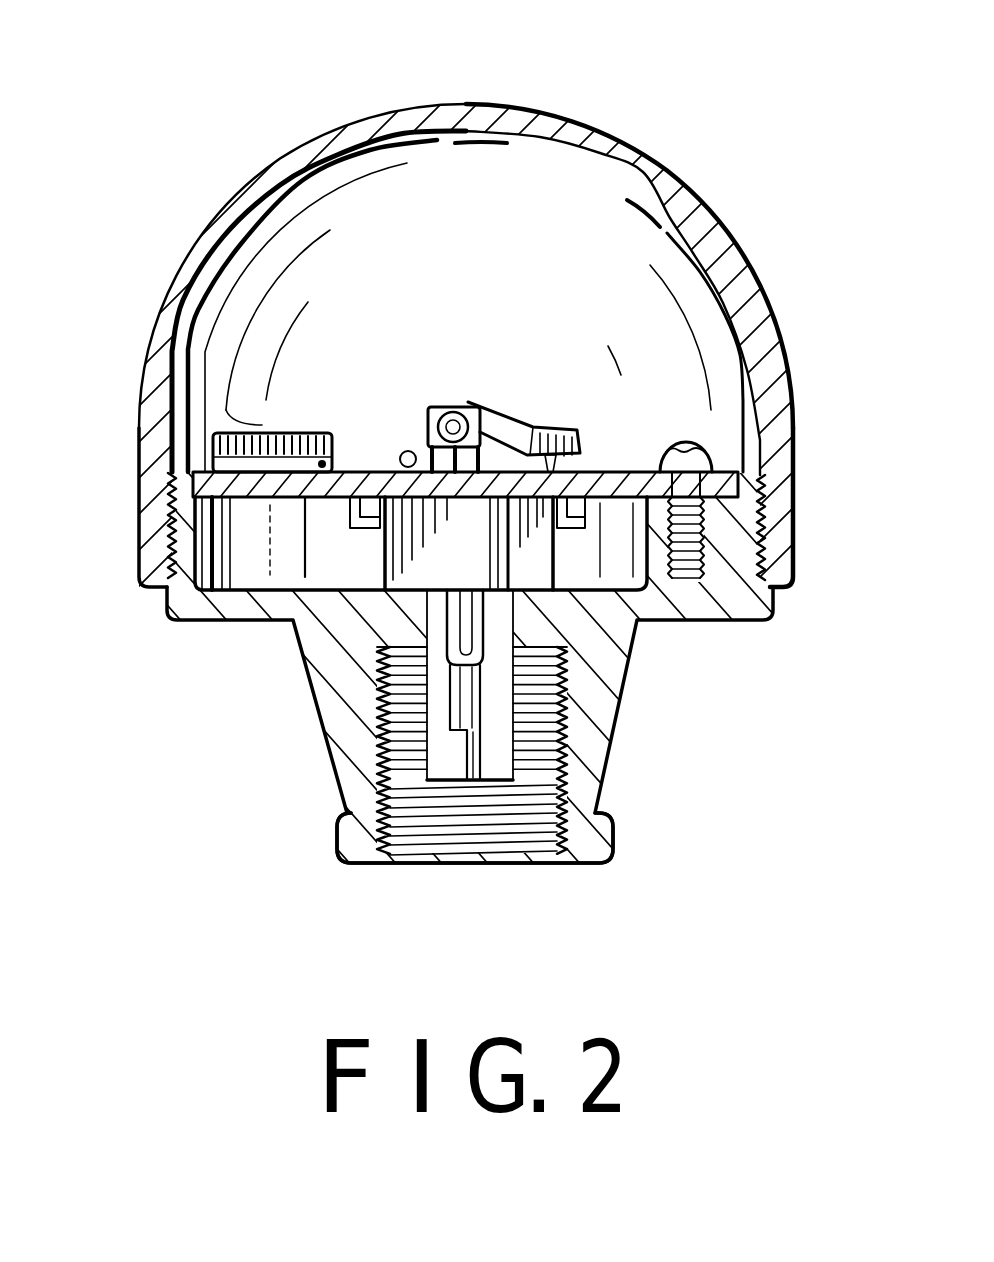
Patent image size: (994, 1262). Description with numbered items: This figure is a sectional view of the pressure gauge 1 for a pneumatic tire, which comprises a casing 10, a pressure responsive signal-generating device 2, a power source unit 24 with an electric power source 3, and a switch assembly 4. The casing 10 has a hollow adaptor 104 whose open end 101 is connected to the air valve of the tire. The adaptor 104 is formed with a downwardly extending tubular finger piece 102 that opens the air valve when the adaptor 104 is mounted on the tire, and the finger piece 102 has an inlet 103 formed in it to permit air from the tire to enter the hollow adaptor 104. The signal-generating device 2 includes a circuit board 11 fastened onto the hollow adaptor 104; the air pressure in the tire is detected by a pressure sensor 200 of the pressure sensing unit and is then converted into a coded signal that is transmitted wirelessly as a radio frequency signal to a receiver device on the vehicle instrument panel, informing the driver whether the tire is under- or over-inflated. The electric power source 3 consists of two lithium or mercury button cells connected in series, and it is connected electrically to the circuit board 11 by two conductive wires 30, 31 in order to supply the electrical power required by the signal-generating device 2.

The pressure gauge 1 is at (793, 207).
The pressure responsive signal-generating device 2 is at (374, 246).
The power source unit 24 is at (303, 396).
The electric power source 3 is at (262, 425).
The switch assembly 4 is at (552, 407).
The conductive wire 30 is at (176, 432).
The conductive wire 31 is at (313, 473).
The circuit board 11 is at (172, 542).
The casing 10 is at (778, 540).
The hollow adaptor 104 is at (730, 597).
The pressure sensor 200 is at (560, 593).
The tubular finger piece 102 is at (498, 703).
The open end 101 is at (425, 843).
The inlet 103 is at (523, 863).